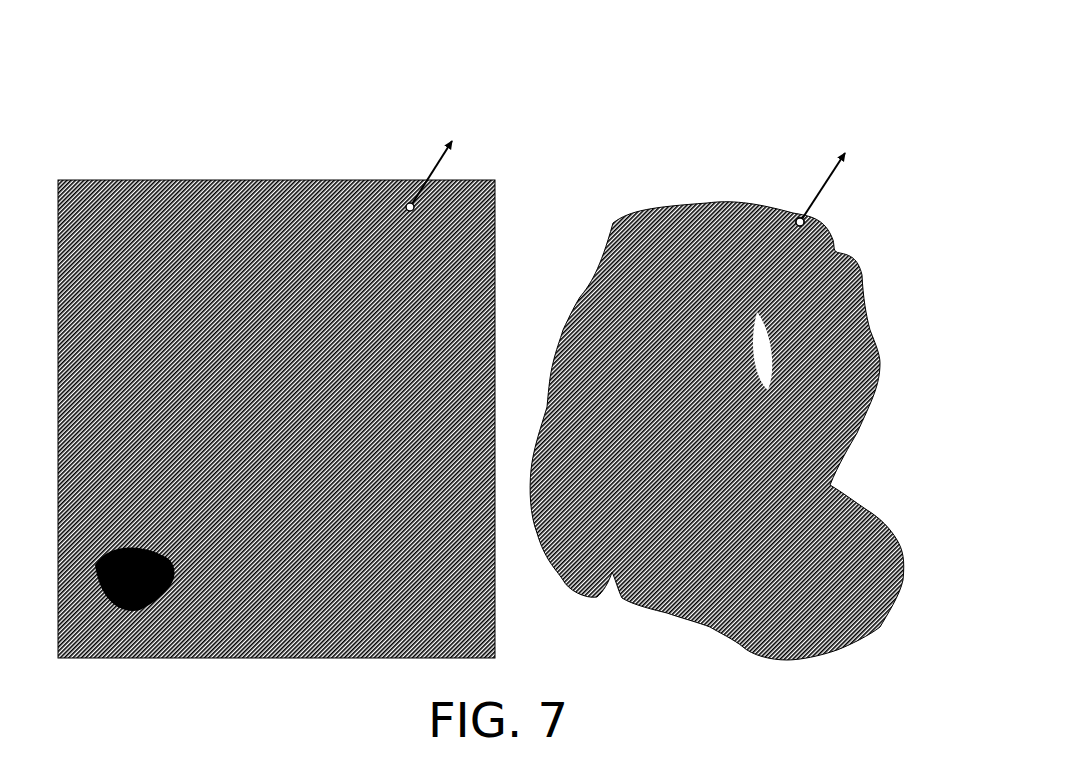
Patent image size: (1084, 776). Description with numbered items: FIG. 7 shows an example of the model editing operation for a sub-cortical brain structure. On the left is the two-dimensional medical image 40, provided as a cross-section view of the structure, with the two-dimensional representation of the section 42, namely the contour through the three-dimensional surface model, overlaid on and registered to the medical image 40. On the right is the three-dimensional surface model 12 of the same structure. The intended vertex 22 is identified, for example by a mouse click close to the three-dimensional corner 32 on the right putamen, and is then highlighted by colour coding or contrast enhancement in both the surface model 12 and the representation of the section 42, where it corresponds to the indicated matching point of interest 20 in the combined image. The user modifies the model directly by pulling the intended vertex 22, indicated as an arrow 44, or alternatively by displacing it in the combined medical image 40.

The 3D surface model 12 is at (897, 110).
The matching point of interest 20 is at (795, 215).
The intended vertex 22 is at (406, 203).
The 3D corner 32 is at (838, 218).
The 2D medical image 40 is at (118, 125).
The 2D representation of a section 42 is at (125, 567).
The arrow 44 is at (430, 175).